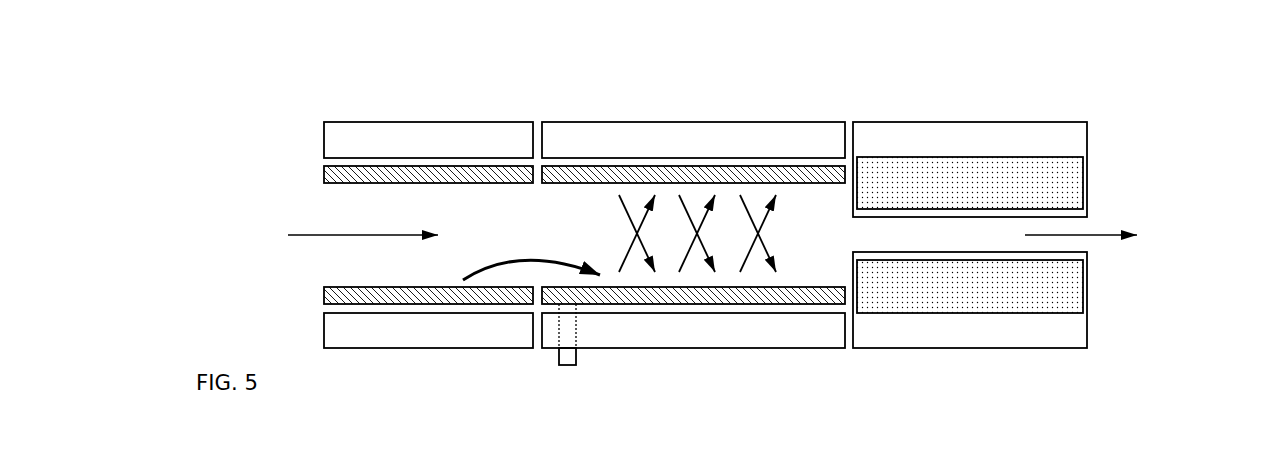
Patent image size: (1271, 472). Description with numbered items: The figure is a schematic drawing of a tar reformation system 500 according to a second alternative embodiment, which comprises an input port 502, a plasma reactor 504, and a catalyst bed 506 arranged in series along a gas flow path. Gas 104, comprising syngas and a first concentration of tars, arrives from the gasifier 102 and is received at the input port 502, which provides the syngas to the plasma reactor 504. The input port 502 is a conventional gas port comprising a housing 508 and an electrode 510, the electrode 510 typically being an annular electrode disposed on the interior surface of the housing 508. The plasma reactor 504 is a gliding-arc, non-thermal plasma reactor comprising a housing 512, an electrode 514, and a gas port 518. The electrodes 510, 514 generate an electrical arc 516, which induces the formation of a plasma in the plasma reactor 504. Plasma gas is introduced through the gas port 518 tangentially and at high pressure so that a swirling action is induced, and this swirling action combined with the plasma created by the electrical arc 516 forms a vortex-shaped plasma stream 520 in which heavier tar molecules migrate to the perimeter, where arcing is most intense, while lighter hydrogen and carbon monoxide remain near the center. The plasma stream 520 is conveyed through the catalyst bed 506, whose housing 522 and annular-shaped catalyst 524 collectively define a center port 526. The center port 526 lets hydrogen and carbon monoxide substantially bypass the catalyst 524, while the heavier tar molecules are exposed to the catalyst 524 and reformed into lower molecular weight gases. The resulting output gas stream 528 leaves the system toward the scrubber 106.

The tar reformation system 500 is at (270, 62).
The gasifier 102 is at (307, 251).
The gas 104 is at (326, 237).
The scrubber 106 is at (1135, 225).
The input port 502 is at (391, 79).
The plasma reactor 504 is at (651, 81).
The catalyst bed 506 is at (945, 79).
The housing 508 is at (374, 150).
The electrode 510 is at (472, 297).
The housing 512 is at (592, 150).
The electrode 514 is at (618, 293).
The electrical arc 516 is at (533, 256).
The gas port 518 is at (563, 358).
The plasma stream 520 is at (785, 246).
The housing 522 is at (903, 150).
The catalyst 524 is at (912, 193).
The center port 526 is at (938, 245).
The output gas stream 528 is at (1095, 232).